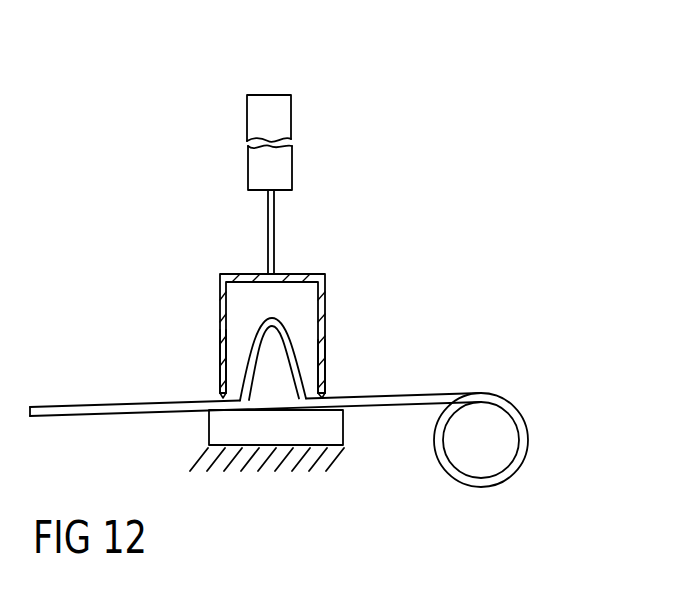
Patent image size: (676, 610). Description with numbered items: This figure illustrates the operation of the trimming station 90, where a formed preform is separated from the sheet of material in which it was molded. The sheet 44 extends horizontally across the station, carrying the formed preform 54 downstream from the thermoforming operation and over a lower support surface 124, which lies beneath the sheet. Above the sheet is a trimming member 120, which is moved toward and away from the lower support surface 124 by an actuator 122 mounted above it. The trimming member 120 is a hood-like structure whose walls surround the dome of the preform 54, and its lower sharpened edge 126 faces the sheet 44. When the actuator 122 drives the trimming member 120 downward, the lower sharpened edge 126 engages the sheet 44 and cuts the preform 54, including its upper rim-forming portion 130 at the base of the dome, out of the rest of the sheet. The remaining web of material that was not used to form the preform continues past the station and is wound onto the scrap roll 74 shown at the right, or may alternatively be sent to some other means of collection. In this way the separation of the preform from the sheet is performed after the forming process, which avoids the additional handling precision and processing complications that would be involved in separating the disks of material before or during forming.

The sheet 44 is at (393, 411).
The preform 54 is at (302, 340).
The scrap roll 74 is at (500, 384).
The trimming station 90 is at (382, 257).
The trimming member 120 is at (220, 296).
The actuator 122 is at (248, 178).
The lower support surface 124 is at (210, 428).
The lower sharpened edge 126 is at (220, 380).
The upper rim-forming portion 130 is at (318, 388).